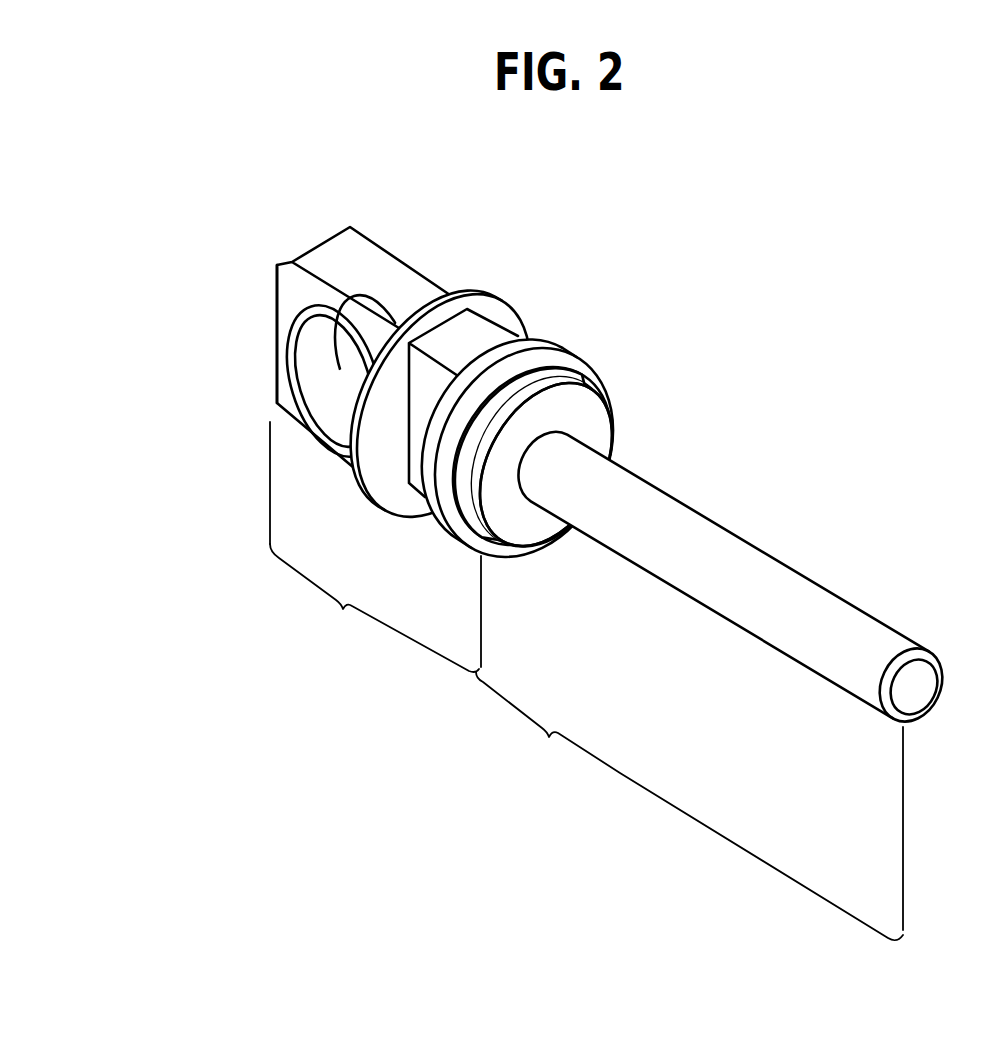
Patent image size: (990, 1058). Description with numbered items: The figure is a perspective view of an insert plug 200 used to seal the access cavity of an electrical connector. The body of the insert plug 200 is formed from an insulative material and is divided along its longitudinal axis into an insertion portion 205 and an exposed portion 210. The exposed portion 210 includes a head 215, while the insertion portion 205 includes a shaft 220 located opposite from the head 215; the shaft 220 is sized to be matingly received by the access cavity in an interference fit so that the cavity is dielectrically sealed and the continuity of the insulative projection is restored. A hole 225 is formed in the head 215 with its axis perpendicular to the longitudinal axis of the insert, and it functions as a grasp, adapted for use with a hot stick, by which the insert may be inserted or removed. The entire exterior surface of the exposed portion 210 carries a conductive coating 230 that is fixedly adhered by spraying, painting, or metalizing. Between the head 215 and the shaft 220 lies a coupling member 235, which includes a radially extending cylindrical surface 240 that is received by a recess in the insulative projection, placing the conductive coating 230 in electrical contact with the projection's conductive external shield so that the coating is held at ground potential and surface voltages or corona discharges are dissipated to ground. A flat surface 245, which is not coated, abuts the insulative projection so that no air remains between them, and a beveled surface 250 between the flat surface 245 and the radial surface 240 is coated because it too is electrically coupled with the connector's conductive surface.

The insert plug 200 is at (806, 391).
The insertion portion 205 is at (689, 806).
The exposed portion 210 is at (375, 547).
The head 215 is at (330, 378).
The shaft 220 is at (862, 627).
The hole 225 is at (335, 338).
The conductive coating 230 is at (270, 345).
The coupling member 235 is at (540, 338).
The radially extending cylindrical surface 240 is at (564, 368).
The flat surface 245 is at (602, 440).
The beveled surface 250 is at (574, 382).